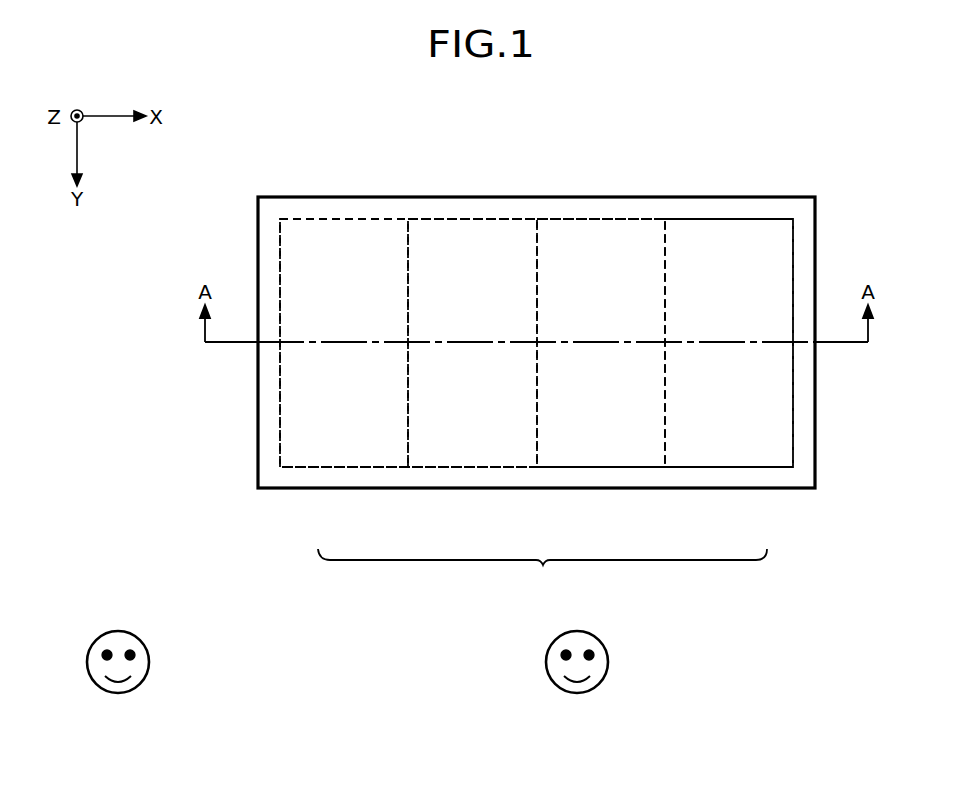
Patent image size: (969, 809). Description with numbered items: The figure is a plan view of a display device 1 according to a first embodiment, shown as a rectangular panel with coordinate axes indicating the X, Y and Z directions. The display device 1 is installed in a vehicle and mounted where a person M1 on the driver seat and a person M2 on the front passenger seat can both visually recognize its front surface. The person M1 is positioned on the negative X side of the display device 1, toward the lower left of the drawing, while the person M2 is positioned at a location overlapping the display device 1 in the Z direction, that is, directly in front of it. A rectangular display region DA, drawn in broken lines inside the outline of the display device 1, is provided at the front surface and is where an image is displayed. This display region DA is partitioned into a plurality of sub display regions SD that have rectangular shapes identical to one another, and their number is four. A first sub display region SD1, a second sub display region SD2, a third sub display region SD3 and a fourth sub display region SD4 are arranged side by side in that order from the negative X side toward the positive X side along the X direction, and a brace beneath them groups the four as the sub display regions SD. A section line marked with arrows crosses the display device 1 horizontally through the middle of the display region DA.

The display device 1 is at (315, 196).
The display region DA is at (626, 219).
The first sub display region SD1 is at (340, 467).
The second sub display region SD2 is at (467, 467).
The third sub display region SD3 is at (595, 467).
The fourth sub display region SD4 is at (726, 467).
The sub display regions SD is at (542, 574).
The person on the driver seat M1 is at (118, 694).
The person on the front passenger seat M2 is at (577, 694).